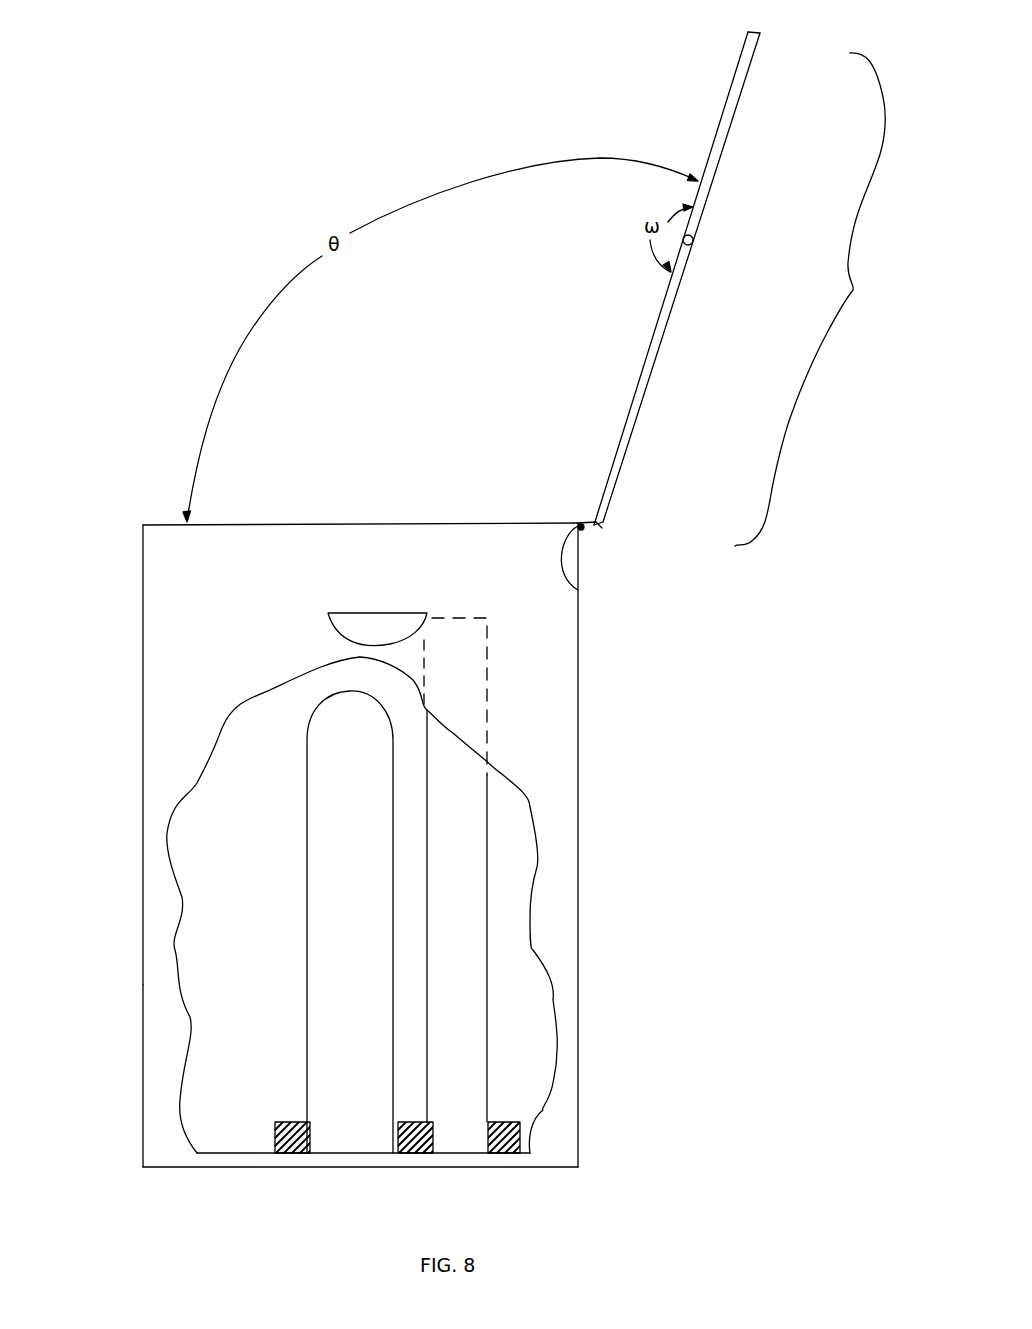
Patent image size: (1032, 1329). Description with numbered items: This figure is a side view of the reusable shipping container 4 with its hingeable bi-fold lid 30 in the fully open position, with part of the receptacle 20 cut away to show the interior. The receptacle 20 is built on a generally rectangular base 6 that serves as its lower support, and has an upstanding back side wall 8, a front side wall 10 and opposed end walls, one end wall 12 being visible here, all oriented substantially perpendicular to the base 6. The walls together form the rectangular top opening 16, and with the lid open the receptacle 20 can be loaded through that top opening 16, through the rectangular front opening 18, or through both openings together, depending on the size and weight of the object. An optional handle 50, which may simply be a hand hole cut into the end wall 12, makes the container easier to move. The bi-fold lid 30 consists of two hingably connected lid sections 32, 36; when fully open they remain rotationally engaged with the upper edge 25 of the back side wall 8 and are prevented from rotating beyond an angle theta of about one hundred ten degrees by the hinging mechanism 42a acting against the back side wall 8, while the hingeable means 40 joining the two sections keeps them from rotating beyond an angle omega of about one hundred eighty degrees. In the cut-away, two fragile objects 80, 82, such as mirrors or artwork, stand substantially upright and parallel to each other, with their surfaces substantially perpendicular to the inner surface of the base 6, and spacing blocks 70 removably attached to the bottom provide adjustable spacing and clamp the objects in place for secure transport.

The container 4 is at (126, 349).
The base 6 is at (308, 1170).
The back side wall 8 is at (578, 996).
The front side wall 10 is at (143, 985).
The end wall 12 is at (160, 892).
The rectangular top opening 16 is at (398, 512).
The rectangular front opening 18 is at (117, 659).
The receptacle 20 is at (590, 709).
The upper edge 25 is at (578, 590).
The hingeable bi-fold lid 30 is at (760, 289).
The lid 32 is at (651, 393).
The lid 36 is at (733, 143).
The hingeable means 40 is at (696, 240).
The hinging mechanism 42a is at (585, 532).
The handle 50 is at (380, 618).
The spacing block 70 is at (290, 1120).
The object 80 is at (458, 888).
The object 82 is at (333, 922).